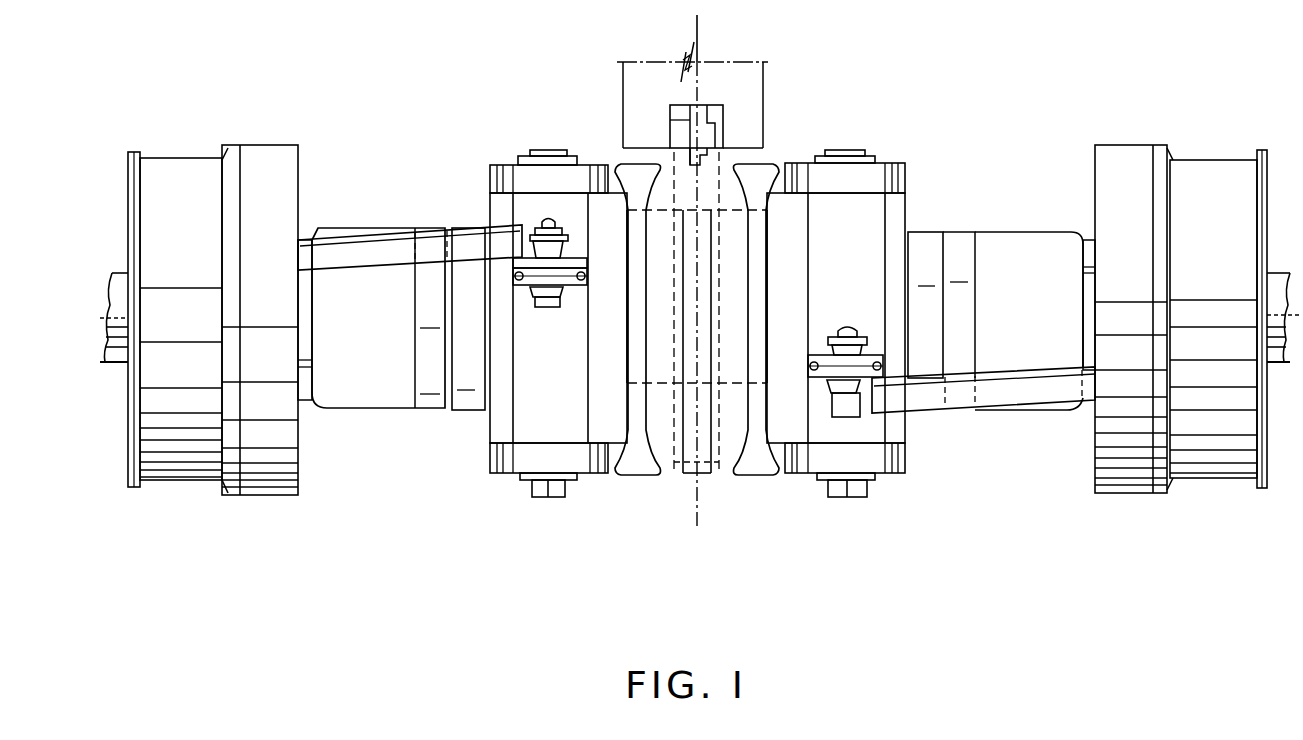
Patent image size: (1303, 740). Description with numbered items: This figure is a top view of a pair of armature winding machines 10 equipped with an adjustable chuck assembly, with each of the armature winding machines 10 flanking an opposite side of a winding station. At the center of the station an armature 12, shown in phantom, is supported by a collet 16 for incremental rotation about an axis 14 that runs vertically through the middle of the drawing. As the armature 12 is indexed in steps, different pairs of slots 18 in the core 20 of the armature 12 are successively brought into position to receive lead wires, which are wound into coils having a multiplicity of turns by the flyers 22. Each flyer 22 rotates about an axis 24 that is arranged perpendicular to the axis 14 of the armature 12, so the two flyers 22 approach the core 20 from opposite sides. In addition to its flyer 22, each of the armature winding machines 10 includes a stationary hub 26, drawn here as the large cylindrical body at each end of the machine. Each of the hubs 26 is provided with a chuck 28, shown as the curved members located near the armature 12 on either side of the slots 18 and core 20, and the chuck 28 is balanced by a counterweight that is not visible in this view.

The armature winding machine 10 is at (390, 182).
The armature 12 is at (684, 472).
The axis 14 is at (697, 38).
The collet 16 is at (745, 92).
The slots 18 is at (683, 291).
The core 20 is at (628, 333).
The flyer 22 is at (520, 238).
The axis 24 is at (108, 290).
The stationary hub 26 is at (420, 420).
The chuck 28 is at (608, 150).